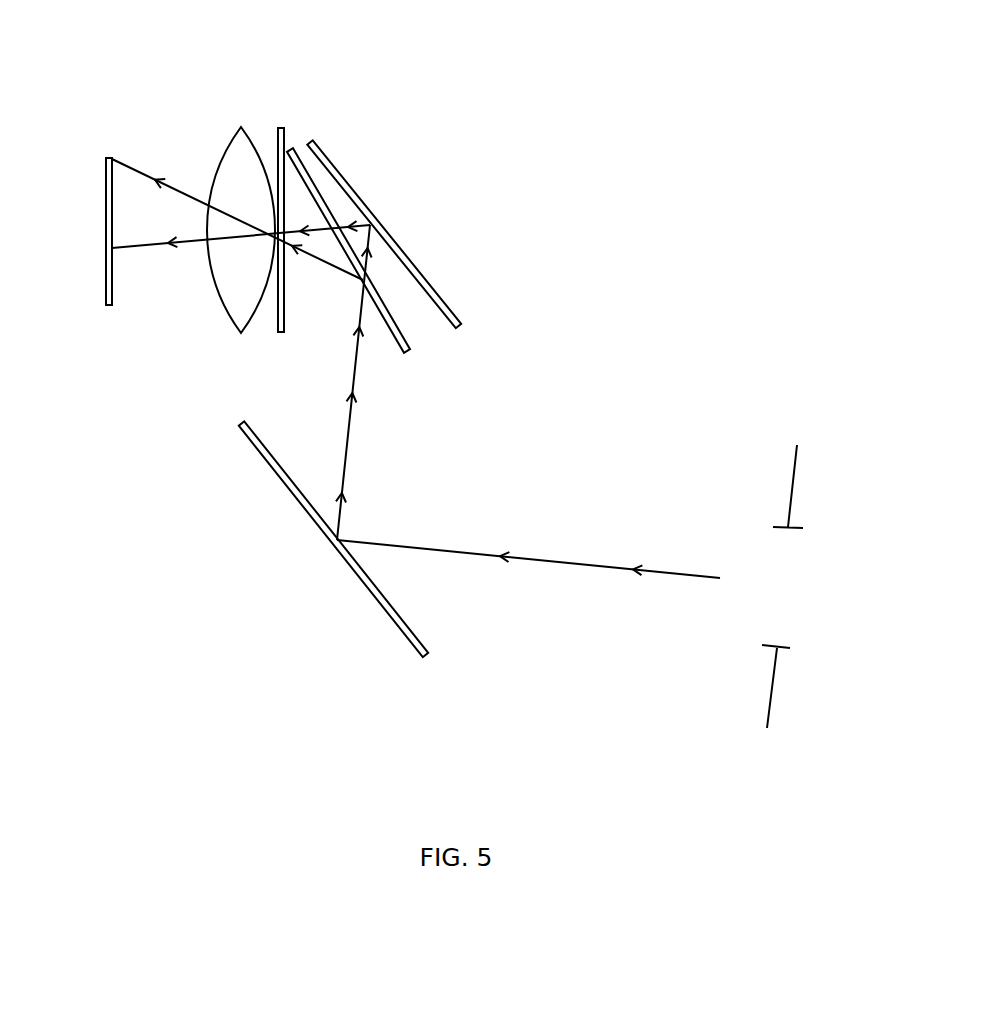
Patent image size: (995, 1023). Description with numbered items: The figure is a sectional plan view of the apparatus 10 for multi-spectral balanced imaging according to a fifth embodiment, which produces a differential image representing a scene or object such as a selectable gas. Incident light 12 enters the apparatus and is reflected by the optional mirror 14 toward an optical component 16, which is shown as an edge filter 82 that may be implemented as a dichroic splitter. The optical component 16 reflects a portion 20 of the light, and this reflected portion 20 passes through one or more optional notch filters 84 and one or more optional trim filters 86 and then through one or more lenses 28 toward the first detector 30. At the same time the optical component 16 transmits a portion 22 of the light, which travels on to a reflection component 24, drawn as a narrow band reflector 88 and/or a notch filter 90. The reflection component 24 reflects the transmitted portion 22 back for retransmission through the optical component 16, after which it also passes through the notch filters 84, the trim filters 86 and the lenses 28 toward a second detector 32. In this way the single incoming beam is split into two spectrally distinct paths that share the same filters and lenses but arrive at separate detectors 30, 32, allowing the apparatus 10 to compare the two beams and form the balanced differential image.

The apparatus 10 is at (753, 73).
The incident light 12 is at (558, 562).
The mirror 14 is at (380, 608).
The optical component 16 is at (397, 352).
The reflected portion 20 is at (345, 273).
The transmitted portion 22 is at (370, 263).
The reflection component 24 is at (455, 310).
The lenses 28 is at (220, 160).
The first detector 30 is at (107, 167).
The second detector 32 is at (106, 277).
The edge filter 82 is at (389, 328).
The notch filters 84 is at (289, 134).
The trim filters 86 is at (278, 137).
The narrow band reflector 88 is at (355, 190).
The notch filter 90 is at (328, 158).